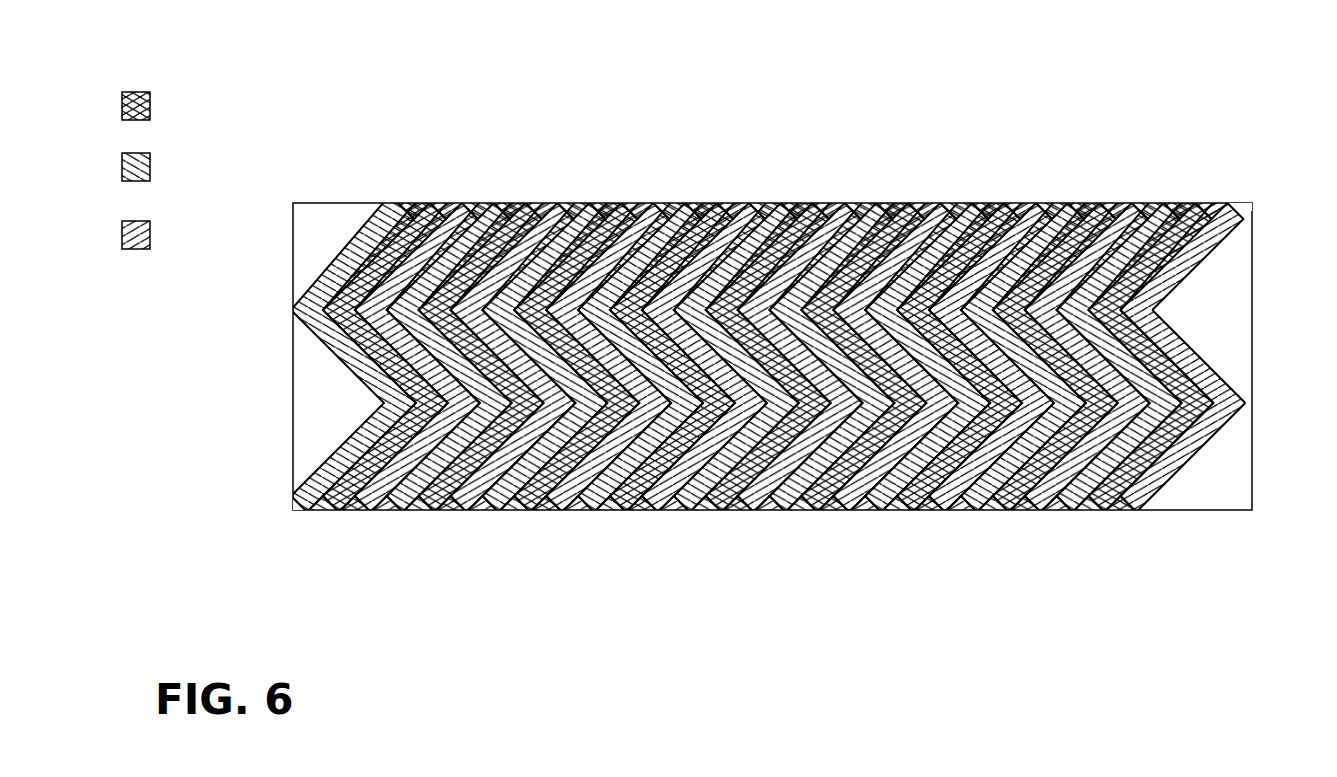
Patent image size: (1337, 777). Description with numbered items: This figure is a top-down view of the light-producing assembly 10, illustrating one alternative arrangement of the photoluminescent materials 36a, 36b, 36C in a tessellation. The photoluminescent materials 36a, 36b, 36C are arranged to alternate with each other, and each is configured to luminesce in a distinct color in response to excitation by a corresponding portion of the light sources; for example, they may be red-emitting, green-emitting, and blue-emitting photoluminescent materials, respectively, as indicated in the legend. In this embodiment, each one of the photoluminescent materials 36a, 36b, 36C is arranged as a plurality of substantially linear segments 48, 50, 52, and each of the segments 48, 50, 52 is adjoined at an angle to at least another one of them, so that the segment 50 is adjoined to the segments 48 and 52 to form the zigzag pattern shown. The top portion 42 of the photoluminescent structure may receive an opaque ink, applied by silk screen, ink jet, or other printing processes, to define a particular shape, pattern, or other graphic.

The light-producing assembly 10 is at (1192, 88).
The photoluminescent material 36a is at (121, 105).
The photoluminescent material 36b is at (121, 168).
The photoluminescent material 36C is at (121, 237).
The top portion 42 is at (790, 333).
The segment 48 is at (1184, 259).
The segment 50 is at (1160, 316).
The segment 52 is at (1212, 411).